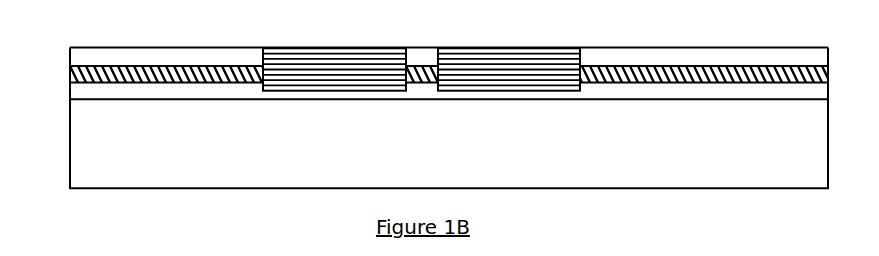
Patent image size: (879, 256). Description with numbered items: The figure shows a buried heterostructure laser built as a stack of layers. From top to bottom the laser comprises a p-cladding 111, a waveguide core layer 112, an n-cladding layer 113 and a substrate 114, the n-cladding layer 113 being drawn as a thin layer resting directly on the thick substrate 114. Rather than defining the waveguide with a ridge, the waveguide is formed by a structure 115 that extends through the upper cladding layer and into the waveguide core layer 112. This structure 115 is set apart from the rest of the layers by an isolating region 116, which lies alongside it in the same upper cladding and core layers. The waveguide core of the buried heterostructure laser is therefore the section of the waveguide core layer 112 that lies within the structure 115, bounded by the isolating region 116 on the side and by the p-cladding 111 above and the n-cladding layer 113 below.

The p-cladding 111 is at (192, 47).
The waveguide core layer 112 is at (70, 72).
The n-cladding layer 113 is at (70, 92).
The substrate 114 is at (70, 156).
The structure 115 is at (407, 47).
The isolating region 116 is at (342, 47).